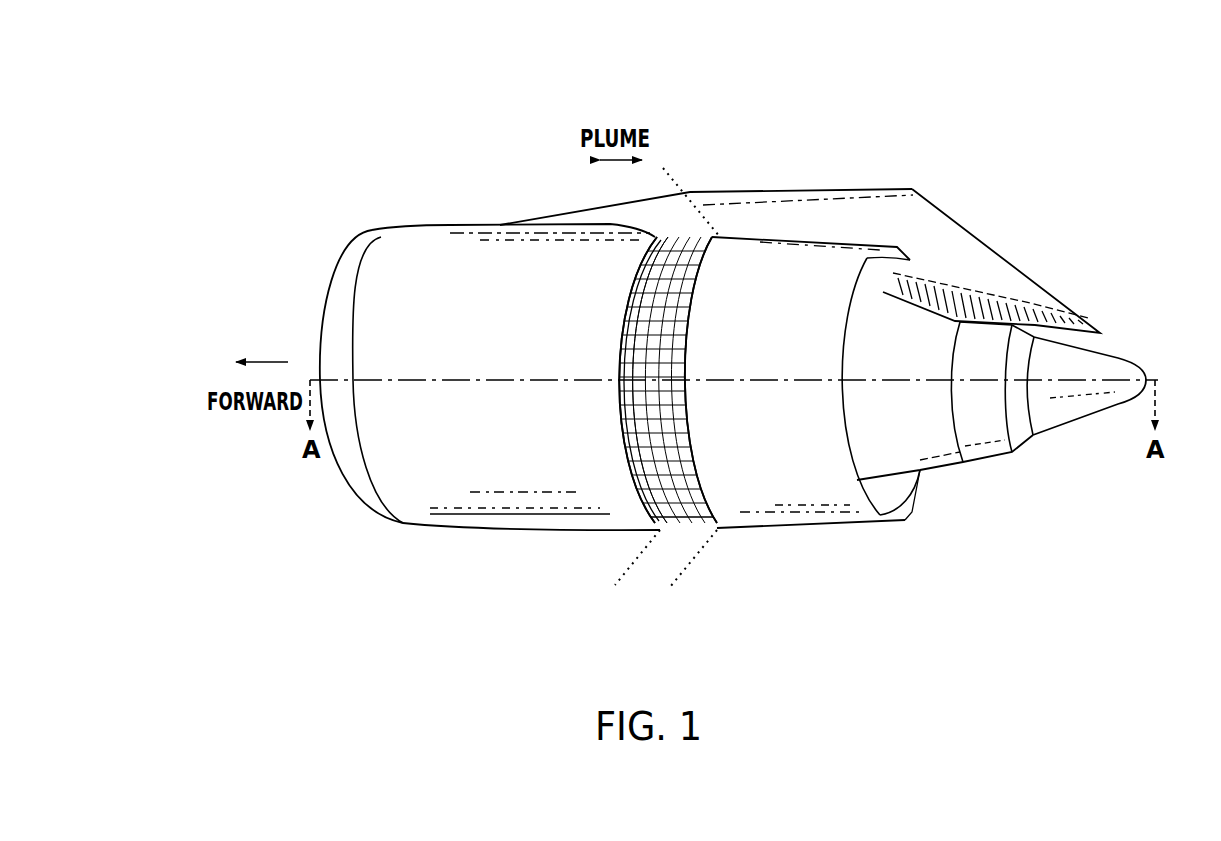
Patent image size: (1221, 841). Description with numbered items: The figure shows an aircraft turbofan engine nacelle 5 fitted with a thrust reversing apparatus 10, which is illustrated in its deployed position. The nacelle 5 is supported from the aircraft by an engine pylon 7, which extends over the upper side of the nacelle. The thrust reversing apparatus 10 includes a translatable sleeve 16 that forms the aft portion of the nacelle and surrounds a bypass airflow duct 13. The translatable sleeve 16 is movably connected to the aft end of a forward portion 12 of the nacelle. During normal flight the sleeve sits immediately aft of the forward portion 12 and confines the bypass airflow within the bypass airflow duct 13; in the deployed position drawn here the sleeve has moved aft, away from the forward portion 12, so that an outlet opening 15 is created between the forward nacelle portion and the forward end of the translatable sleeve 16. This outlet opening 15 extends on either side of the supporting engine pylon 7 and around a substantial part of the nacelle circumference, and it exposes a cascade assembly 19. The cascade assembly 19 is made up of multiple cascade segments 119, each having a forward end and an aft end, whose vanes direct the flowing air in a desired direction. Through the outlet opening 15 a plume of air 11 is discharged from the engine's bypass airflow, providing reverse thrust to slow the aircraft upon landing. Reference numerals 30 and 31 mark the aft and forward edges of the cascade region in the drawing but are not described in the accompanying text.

The turbofan engine nacelle 5 is at (437, 112).
The engine pylon 7 is at (863, 217).
The thrust reversing apparatus 10 is at (780, 223).
The plume of air 11 is at (663, 168).
The forward portion of the nacelle 12 is at (457, 260).
The bypass airflow duct 13 is at (905, 487).
The outlet opening 15 is at (683, 235).
The translatable sleeve 16 is at (817, 530).
The cascade assembly 19 is at (698, 533).
The aft edge of cascade 30 is at (723, 525).
The forward edge of cascade 31 is at (648, 516).
The cascade segments 119 is at (660, 525).